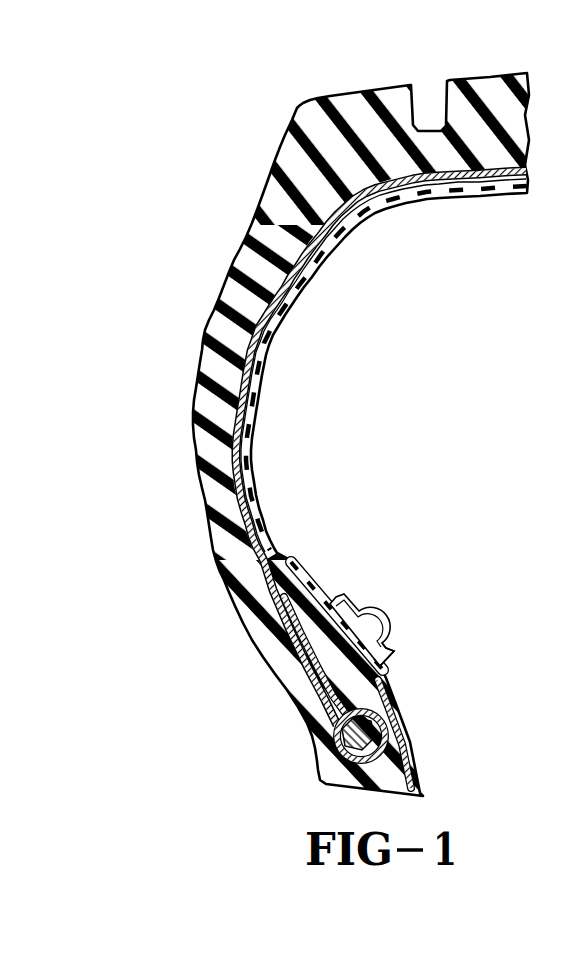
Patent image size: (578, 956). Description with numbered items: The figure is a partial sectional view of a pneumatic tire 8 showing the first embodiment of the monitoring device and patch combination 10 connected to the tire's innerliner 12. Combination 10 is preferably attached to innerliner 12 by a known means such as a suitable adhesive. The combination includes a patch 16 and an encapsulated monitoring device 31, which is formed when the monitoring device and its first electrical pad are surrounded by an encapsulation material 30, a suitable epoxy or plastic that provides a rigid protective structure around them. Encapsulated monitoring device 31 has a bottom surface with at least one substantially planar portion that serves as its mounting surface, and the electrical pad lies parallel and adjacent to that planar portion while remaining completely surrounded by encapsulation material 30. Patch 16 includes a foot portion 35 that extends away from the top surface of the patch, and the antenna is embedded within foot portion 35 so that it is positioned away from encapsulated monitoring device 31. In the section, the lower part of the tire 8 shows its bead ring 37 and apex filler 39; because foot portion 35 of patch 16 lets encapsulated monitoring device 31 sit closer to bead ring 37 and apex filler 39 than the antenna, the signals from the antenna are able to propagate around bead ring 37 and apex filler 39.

The pneumatic tire 8 is at (252, 185).
The monitoring device and patch combination 10 is at (427, 596).
The innerliner 12 is at (268, 522).
The patch 16 is at (398, 681).
The encapsulation material 30 is at (387, 617).
The encapsulated monitoring device 31 is at (400, 644).
The foot portion 35 is at (331, 606).
The bead ring 37 is at (347, 732).
The apex filler 39 is at (322, 675).